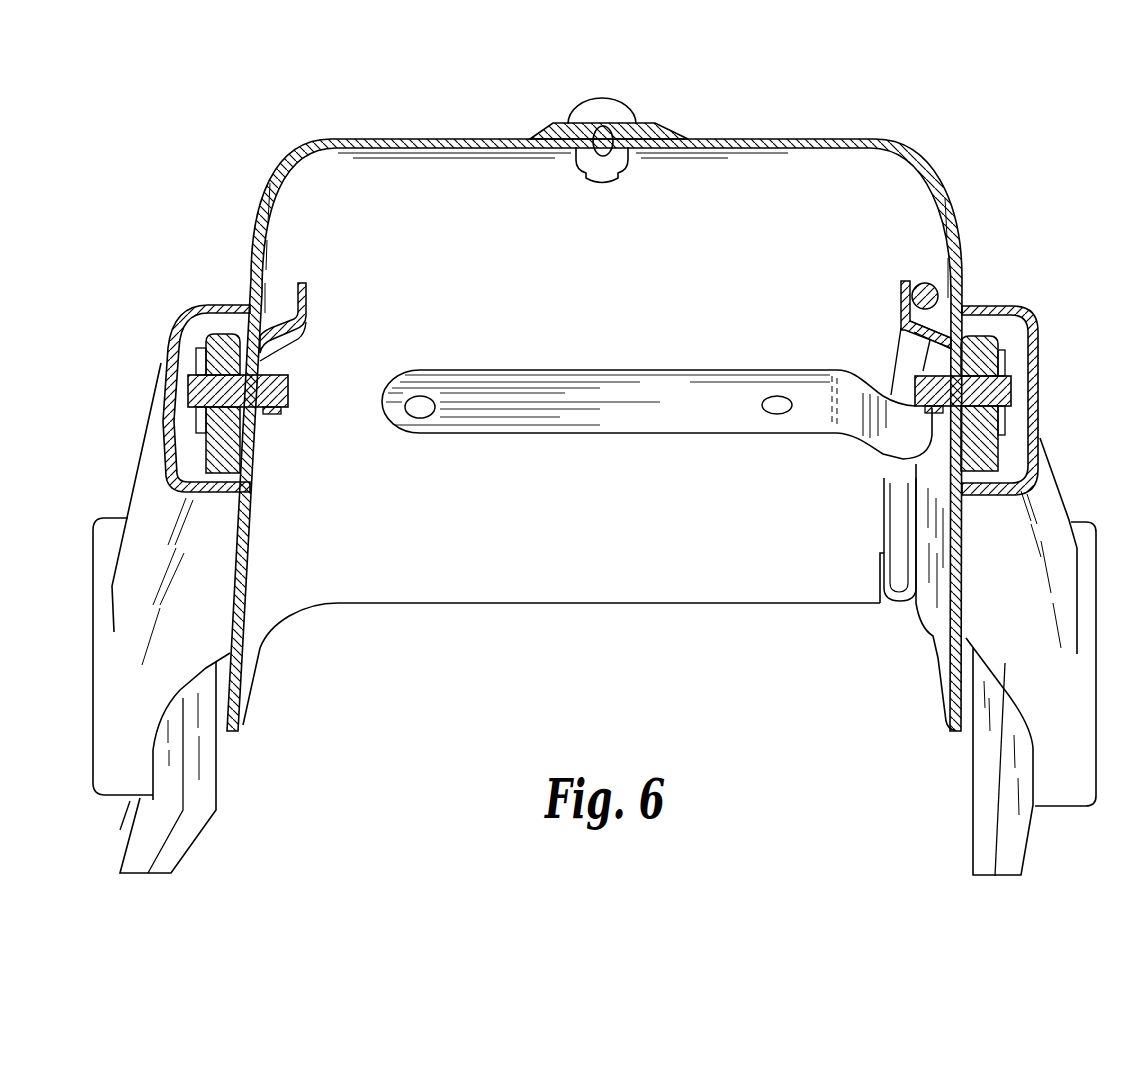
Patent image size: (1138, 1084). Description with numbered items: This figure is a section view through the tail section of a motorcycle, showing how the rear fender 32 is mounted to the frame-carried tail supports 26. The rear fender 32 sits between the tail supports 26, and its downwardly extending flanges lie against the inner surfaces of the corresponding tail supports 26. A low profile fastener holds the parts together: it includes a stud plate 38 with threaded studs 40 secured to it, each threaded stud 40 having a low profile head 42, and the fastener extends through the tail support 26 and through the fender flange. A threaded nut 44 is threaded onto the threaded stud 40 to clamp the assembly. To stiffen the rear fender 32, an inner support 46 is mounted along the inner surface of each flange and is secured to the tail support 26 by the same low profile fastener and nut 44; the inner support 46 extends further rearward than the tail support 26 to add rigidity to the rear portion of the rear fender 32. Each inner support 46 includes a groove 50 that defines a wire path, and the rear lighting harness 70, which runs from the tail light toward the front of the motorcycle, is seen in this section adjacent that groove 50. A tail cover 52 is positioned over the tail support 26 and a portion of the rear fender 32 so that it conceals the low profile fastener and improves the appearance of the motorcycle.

The rear fender 32 is at (801, 131).
The rear lighting harness 70 is at (919, 275).
The groove 50 is at (955, 306).
The inner support 46 is at (893, 302).
The tail support 26 is at (970, 330).
The tail cover 52 is at (1028, 318).
The threaded stud 40 is at (892, 368).
The low profile head 42 is at (1003, 384).
The stud plate 38 is at (995, 419).
The threaded nut 44 is at (880, 457).